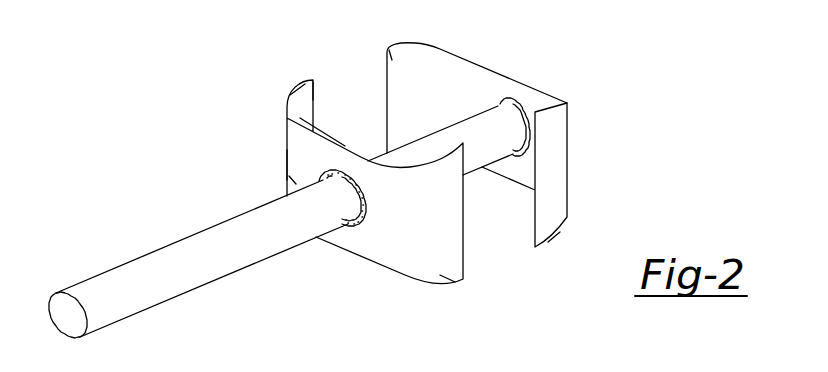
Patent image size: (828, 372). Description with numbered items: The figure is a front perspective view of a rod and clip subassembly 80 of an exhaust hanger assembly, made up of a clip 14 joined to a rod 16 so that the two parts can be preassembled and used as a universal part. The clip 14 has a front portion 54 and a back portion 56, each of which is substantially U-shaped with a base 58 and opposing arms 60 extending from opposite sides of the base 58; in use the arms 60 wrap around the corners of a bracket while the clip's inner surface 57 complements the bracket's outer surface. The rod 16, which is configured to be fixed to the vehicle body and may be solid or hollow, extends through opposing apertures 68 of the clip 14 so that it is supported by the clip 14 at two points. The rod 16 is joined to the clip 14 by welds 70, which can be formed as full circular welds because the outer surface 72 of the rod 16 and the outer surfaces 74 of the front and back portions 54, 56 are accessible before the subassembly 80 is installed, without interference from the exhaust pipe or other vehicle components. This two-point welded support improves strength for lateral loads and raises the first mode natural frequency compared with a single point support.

The clip 14 is at (303, 167).
The rod 16 is at (105, 309).
The front portion 54 is at (302, 153).
The back portion 56 is at (562, 147).
The inner surface 57 is at (327, 137).
The base 58 is at (349, 240).
The arms 60 is at (300, 100).
The apertures 68 is at (330, 180).
The welds 70 is at (361, 218).
The outer surface 72 is at (183, 248).
The outer surfaces 74 is at (297, 180).
The rod and clip subassembly 80 is at (123, 108).